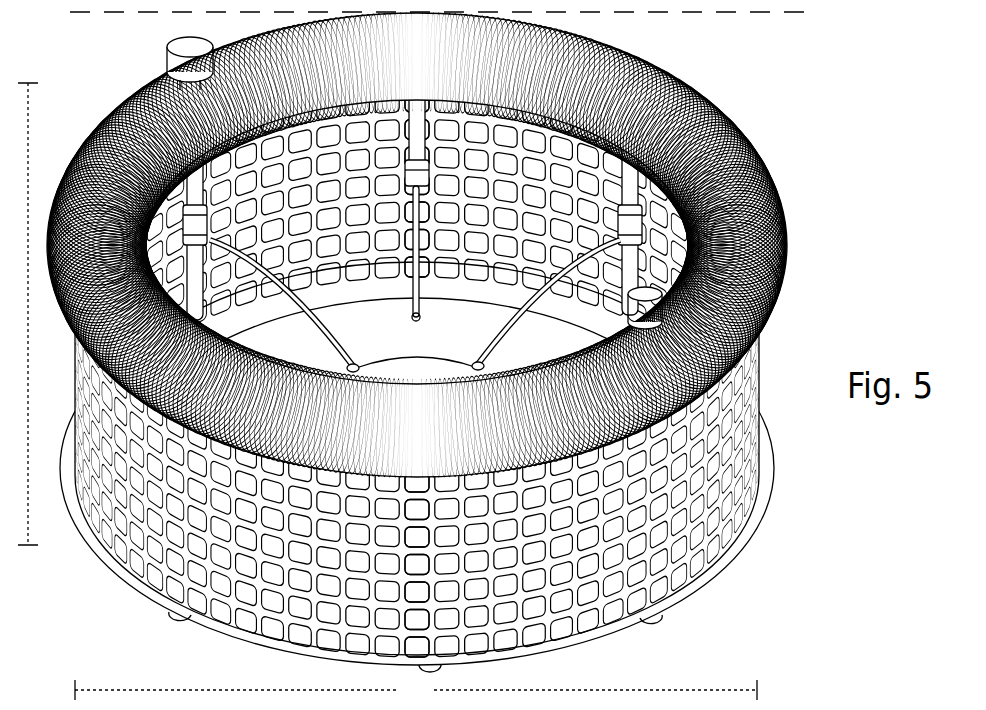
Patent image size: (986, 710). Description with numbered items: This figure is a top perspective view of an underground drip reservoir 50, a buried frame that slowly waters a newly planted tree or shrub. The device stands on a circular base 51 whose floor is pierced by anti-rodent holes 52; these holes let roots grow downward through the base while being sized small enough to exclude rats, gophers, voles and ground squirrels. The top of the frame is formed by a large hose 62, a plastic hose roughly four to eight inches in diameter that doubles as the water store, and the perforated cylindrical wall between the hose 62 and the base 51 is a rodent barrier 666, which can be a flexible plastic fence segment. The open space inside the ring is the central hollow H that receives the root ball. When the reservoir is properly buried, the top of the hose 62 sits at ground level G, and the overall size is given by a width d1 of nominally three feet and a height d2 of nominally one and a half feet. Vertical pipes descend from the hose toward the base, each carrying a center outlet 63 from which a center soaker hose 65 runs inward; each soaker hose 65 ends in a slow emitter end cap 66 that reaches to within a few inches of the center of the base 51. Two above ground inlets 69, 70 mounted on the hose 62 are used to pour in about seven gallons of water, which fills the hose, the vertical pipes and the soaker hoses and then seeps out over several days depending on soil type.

The underground drip reservoir 50 is at (778, 133).
The circular base 51 is at (762, 480).
The anti-rodent holes 52 is at (275, 338).
The hose 62 is at (787, 273).
The center outlet 63 is at (116, 114).
The center soaker hoses 65 is at (313, 313).
The slow emitter end cap 66 is at (354, 364).
The above ground inlet 69 is at (174, 47).
The above ground inlet 70 is at (757, 343).
The rodent barrier 666 is at (688, 568).
The central hollow H is at (535, 163).
The ground level G is at (773, 13).
The diameter dimension d1 is at (416, 690).
The height dimension d2 is at (25, 314).